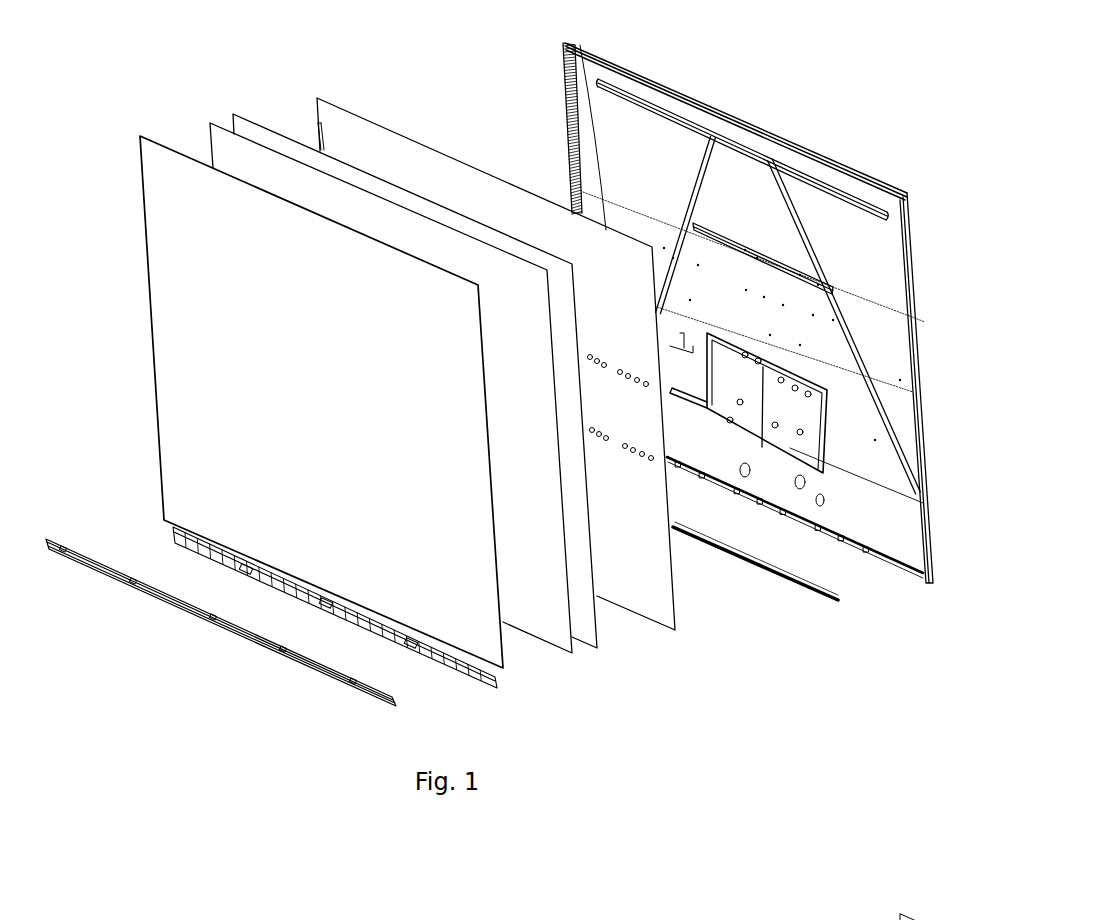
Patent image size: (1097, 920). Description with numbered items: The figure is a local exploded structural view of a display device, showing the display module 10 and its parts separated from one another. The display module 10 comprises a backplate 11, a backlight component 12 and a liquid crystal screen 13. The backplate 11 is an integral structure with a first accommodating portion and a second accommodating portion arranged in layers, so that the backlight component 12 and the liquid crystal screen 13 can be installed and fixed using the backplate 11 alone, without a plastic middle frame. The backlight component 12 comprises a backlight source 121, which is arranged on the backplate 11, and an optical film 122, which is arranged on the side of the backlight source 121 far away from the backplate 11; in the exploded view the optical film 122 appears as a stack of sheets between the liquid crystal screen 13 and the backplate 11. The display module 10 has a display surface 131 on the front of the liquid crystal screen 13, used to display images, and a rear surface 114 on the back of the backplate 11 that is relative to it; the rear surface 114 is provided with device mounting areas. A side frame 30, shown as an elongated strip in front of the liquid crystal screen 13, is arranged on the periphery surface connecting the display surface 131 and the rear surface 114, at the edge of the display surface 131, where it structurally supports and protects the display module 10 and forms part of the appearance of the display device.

The display module 10 is at (706, 43).
The backplate 11 is at (820, 223).
The rear surface 114 is at (925, 332).
The backlight component 12 is at (610, 687).
The backlight source 121 is at (727, 425).
The optical film 122 is at (632, 543).
The liquid crystal screen 13 is at (145, 219).
The display surface 131 is at (253, 426).
The side frame 30 is at (217, 617).